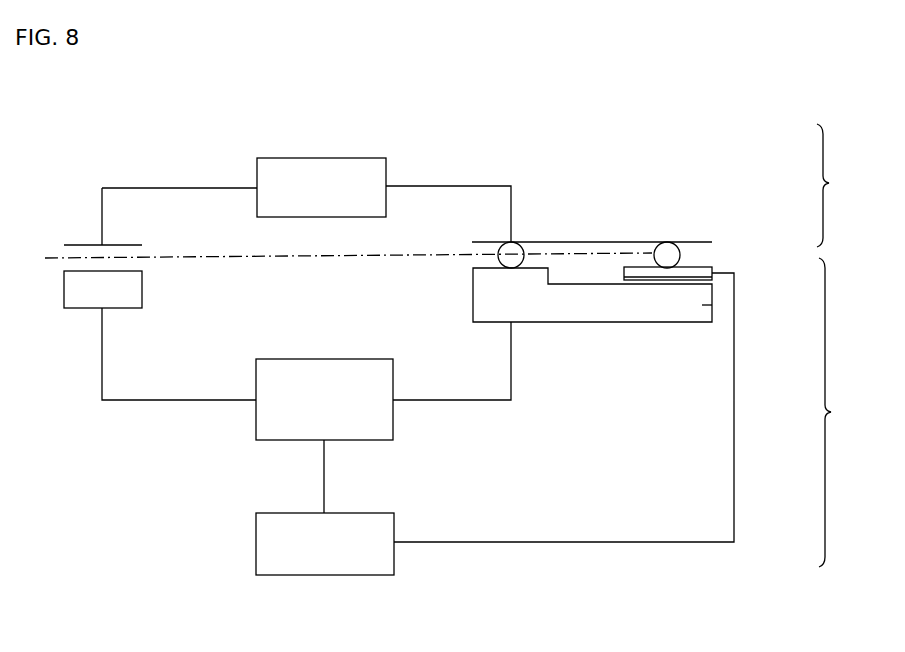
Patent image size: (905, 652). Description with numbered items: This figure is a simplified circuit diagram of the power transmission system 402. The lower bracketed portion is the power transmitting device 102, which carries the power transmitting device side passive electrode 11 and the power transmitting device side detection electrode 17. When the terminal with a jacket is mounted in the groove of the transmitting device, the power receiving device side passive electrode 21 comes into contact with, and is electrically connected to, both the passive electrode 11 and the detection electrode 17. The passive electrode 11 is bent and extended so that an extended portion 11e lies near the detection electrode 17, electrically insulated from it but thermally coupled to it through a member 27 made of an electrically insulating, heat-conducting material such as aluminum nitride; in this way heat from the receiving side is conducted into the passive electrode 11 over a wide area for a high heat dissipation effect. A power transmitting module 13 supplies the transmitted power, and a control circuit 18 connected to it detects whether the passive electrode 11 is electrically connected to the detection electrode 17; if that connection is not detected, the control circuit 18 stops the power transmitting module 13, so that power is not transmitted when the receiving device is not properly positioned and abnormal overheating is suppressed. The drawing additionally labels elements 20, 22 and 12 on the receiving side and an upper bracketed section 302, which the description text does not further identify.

The power supply / matching circuit box 20 is at (322, 157).
The electrode plate 22 is at (130, 243).
The circuit box 12 is at (142, 287).
The power receiving device side passive electrode 21 is at (585, 238).
The power transmitting device side detection electrode 17 is at (700, 268).
The power transmitting device side passive electrode 11 is at (479, 296).
The member 27 is at (713, 279).
The extended portion 11e is at (702, 305).
The power transmitting module 13 is at (325, 359).
The control circuit 18 is at (256, 538).
The upper unit 302 is at (844, 185).
The power transmitting device 102 is at (847, 412).
The power transmission system 402 is at (756, 72).